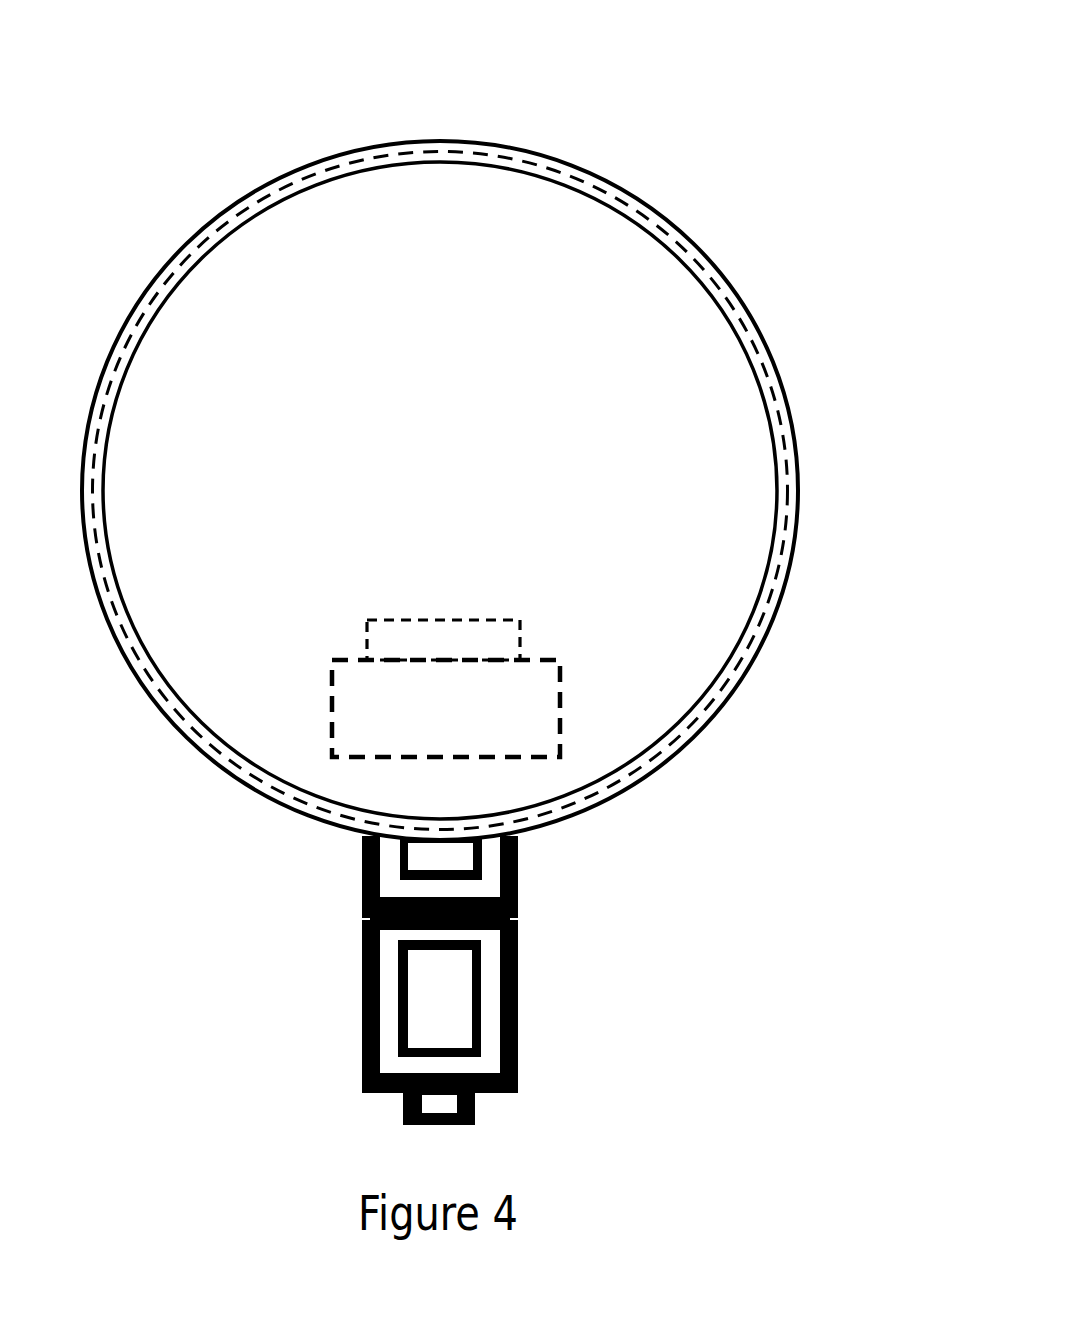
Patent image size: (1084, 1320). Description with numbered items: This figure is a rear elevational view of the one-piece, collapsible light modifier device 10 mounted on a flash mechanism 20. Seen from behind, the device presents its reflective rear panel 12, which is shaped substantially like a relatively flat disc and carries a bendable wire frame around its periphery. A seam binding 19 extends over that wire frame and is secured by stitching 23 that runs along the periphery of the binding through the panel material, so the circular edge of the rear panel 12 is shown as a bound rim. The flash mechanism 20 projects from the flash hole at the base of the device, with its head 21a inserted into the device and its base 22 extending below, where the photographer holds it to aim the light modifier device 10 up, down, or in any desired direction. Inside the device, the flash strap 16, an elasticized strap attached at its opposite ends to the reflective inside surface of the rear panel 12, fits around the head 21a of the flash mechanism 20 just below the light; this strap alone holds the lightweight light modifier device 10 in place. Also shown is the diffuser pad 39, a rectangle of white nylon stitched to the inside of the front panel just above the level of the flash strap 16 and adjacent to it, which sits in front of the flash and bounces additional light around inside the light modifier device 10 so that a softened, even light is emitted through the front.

The light modifier device 10 is at (669, 160).
The reflective rear panel 12 is at (702, 643).
The flash strap 16 is at (562, 728).
The seam binding 19 is at (747, 320).
The flash mechanism 20 is at (547, 942).
The head of the flash mechanism 21a is at (361, 840).
The base of the flash mechanism 22 is at (463, 993).
The stitching 23 is at (672, 240).
The diffuser pad 39 is at (492, 638).